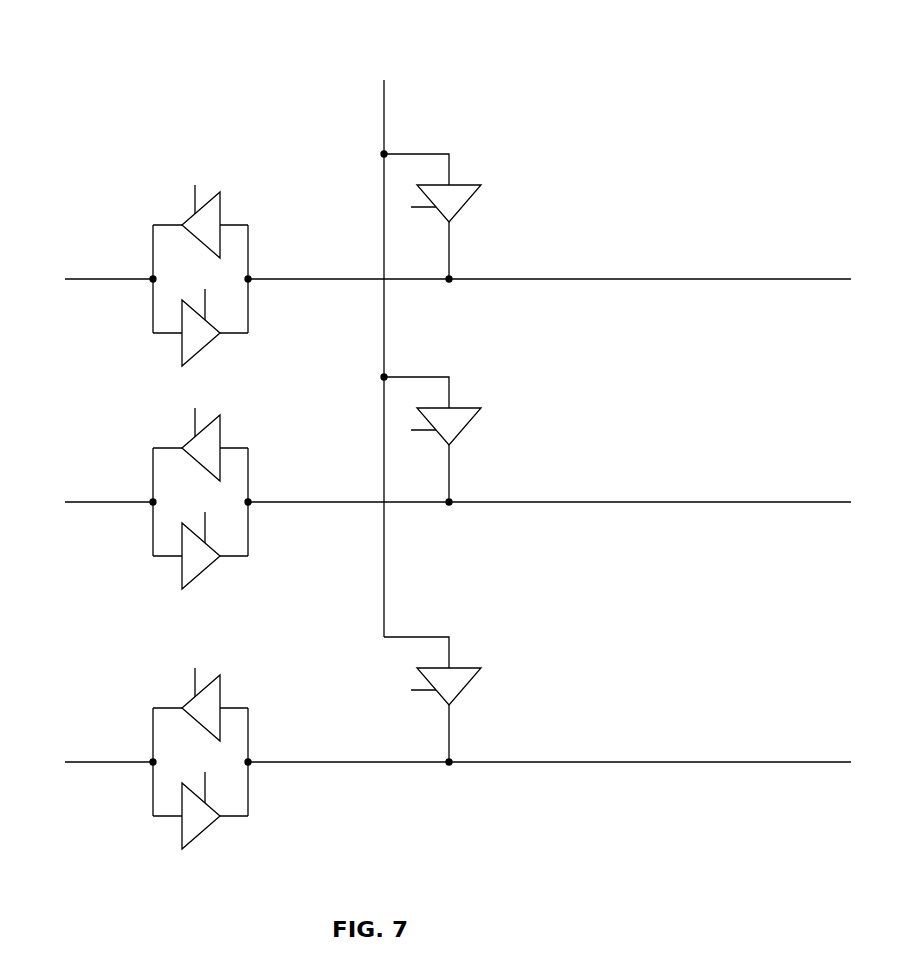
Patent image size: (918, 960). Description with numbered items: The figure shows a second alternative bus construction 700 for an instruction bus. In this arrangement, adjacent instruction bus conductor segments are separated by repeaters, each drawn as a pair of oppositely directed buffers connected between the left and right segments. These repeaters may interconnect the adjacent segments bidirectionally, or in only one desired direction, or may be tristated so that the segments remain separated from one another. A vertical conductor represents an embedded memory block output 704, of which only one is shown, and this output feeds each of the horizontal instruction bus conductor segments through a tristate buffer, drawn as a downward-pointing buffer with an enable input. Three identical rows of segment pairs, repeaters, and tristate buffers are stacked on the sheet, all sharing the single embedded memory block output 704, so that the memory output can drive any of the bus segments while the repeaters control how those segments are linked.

The second alternative bus construction 700 is at (448, 435).
The embedded memory block output 704 is at (384, 122).